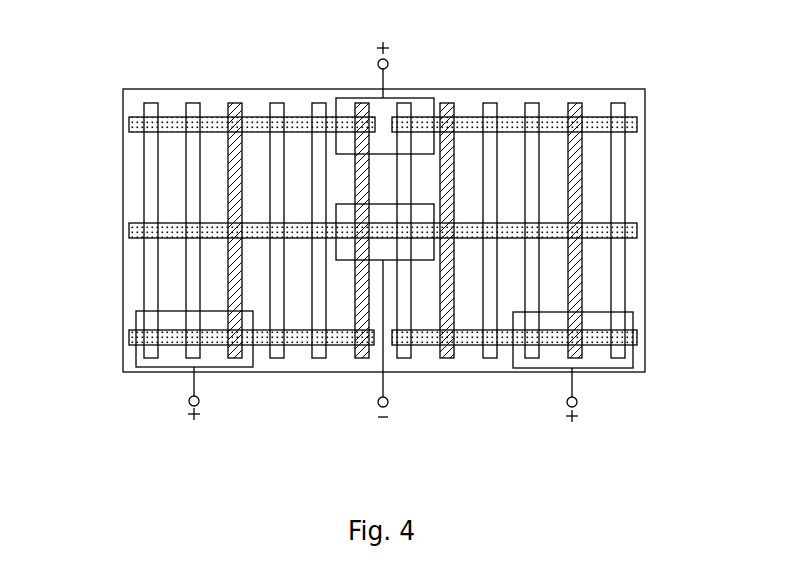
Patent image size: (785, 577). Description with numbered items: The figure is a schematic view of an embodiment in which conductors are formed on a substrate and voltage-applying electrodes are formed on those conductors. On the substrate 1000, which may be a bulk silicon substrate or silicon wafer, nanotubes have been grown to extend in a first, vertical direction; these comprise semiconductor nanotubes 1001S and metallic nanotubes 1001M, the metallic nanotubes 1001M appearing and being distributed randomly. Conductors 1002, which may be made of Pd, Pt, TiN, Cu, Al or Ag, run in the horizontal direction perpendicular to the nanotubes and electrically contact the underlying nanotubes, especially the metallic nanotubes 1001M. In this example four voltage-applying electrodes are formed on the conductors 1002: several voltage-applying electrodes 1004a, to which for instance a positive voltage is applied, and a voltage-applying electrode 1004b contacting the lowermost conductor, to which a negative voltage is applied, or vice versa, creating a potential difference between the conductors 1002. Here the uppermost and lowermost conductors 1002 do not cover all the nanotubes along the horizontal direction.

The substrate 1000 is at (637, 358).
The metallic nanotubes 1001M is at (350, 60).
The semiconductor nanotubes 1001S is at (618, 103).
The conductors 1002 is at (718, 203).
The voltage-applying electrode 1004a is at (522, 60).
The voltage-applying electrode 1004b is at (426, 260).